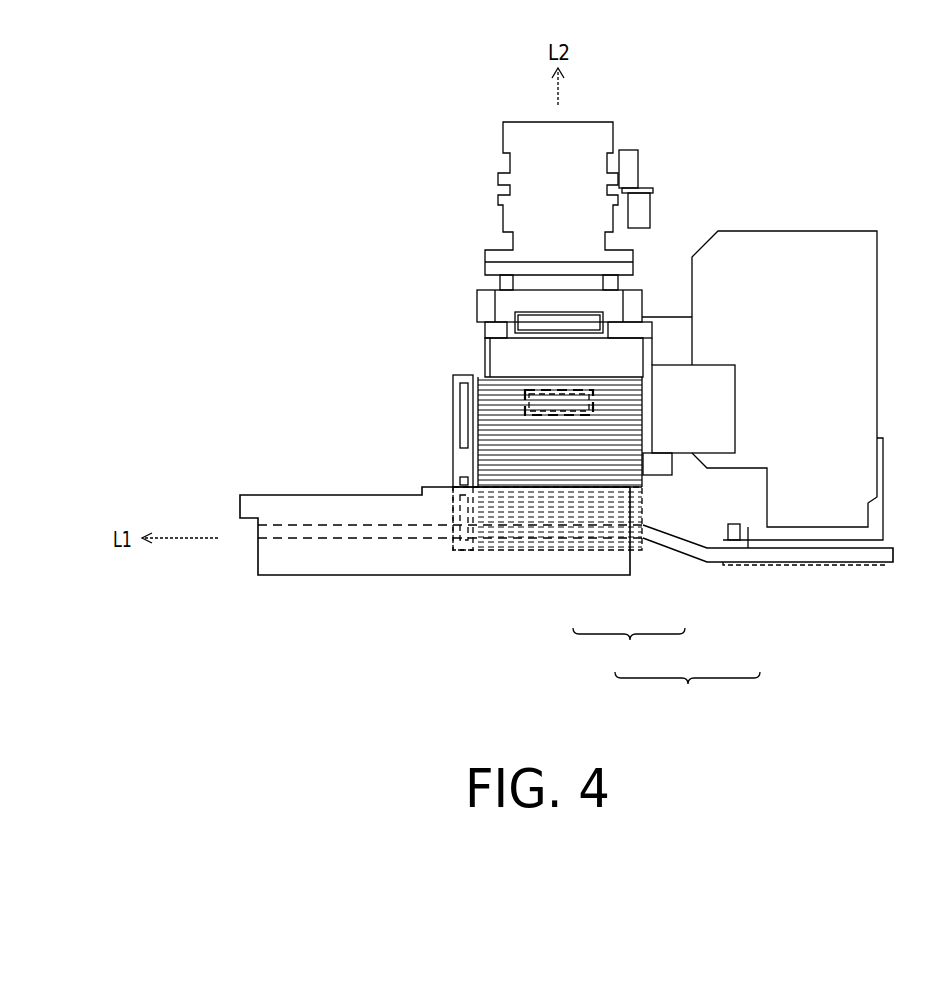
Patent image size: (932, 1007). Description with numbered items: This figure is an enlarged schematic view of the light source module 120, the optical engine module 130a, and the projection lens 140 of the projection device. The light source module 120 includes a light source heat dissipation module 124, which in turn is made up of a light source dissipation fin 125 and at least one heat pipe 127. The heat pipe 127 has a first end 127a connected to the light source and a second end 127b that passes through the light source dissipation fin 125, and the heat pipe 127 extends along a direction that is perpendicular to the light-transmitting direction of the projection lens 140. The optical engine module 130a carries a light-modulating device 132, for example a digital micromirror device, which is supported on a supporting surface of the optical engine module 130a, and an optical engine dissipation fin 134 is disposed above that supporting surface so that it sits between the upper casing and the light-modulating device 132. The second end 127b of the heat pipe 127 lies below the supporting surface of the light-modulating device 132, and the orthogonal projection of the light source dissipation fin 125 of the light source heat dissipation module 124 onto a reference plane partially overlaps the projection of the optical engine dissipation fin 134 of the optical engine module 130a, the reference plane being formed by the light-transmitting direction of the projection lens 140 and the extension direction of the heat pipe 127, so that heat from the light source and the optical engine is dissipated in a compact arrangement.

The projection lens 140 is at (521, 131).
The optical engine module 130a is at (477, 462).
The light-modulating device 132 is at (523, 396).
The optical engine dissipation fin 134 is at (493, 458).
The second end of the heat pipe 127b is at (302, 528).
The light source dissipation fin 125 is at (585, 570).
The heat pipe 127 is at (668, 556).
The first end of the heat pipe 127a is at (860, 556).
The light source heat dissipation module 124 is at (803, 550).
The light source module 120 is at (687, 694).